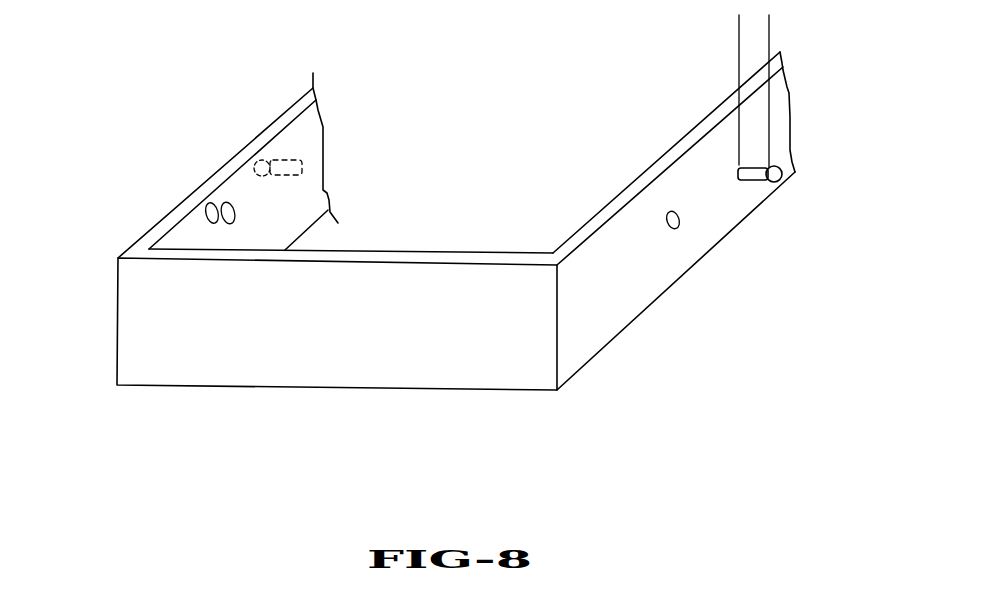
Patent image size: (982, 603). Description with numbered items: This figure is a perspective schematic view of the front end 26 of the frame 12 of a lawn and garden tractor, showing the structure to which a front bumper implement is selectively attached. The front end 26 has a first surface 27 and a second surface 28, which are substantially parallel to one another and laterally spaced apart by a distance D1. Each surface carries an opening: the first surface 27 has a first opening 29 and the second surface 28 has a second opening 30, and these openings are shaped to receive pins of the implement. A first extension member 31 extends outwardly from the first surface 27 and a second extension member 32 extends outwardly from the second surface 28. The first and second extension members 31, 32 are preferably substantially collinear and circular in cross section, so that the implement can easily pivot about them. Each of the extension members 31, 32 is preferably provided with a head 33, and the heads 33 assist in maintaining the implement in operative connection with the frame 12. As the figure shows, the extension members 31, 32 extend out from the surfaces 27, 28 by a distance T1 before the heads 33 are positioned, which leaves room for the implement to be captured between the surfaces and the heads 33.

The frame 12 is at (178, 122).
The front end 26 is at (447, 368).
The first surface 27 is at (603, 282).
The second surface 28 is at (190, 247).
The first opening 29 is at (676, 228).
The second opening 30 is at (202, 192).
The first extension member 31 is at (755, 181).
The second extension member 32 is at (291, 157).
The heads 33 is at (262, 160).
The distance D1 is at (557, 320).
The distance T1 is at (820, 42).